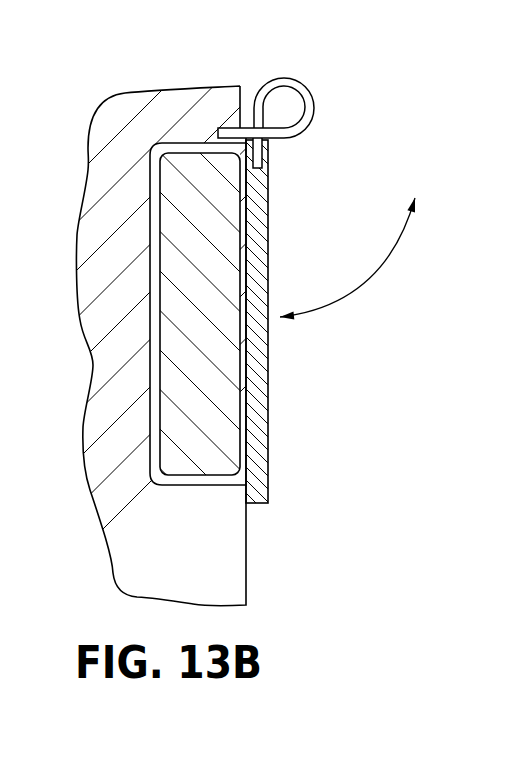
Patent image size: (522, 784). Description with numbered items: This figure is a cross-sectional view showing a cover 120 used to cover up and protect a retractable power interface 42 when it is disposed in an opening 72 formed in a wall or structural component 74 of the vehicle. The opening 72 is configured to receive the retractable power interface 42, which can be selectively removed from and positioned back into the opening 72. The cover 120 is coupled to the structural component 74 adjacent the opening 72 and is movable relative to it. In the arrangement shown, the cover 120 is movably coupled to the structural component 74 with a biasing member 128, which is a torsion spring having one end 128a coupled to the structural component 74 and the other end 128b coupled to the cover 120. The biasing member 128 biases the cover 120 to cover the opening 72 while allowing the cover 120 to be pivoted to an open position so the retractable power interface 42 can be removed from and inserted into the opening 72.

The structural component 74 is at (98, 192).
The opening 72 is at (175, 147).
The retractable power interface 42 is at (175, 336).
The cover 120 is at (258, 410).
The biasing member 128 is at (300, 81).
The one end of biasing member 128a is at (206, 127).
The other end of biasing member 128b is at (270, 156).